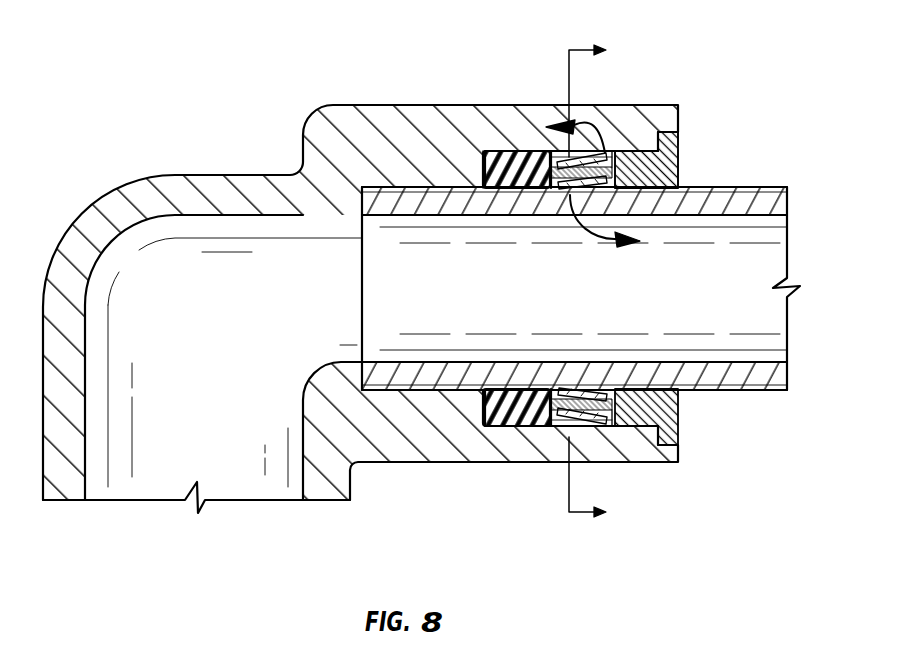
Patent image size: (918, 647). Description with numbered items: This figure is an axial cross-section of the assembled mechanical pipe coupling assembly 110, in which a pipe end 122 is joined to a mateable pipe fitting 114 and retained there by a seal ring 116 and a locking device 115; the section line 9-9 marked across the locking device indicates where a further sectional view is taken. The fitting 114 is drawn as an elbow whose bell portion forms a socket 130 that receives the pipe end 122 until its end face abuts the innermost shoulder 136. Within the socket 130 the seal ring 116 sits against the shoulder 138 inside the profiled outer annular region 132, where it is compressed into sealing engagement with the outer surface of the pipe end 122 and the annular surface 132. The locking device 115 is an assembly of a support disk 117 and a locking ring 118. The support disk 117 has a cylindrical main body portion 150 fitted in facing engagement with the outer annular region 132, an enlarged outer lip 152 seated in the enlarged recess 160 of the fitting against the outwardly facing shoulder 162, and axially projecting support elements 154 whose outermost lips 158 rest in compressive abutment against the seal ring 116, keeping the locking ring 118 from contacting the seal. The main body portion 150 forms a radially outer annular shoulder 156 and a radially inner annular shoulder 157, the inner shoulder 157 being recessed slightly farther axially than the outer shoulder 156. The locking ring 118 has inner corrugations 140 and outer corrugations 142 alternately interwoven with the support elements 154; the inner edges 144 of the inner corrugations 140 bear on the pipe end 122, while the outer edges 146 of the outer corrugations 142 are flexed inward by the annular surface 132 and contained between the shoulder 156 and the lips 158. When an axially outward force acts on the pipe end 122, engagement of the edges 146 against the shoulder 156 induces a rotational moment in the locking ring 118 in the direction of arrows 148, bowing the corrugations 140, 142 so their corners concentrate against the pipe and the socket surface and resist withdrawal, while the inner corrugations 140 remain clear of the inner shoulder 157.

The section line 9- 9 is at (587, 282).
The mechanical pipe coupling assembly 110 is at (316, 64).
The pipe fitting 114 is at (238, 173).
The locking device 115 is at (678, 180).
The seal ring 116 is at (490, 148).
The support disk 117 is at (678, 160).
The locking ring 118 is at (556, 151).
The pipe end 122 is at (360, 275).
The socket 130 is at (680, 388).
The outer annular region of the socket profile 132 is at (527, 428).
The innermost shoulder 136 is at (360, 373).
The shoulder 138 is at (480, 170).
The inner corrugations 140 is at (580, 189).
The outer corrugations 142 is at (593, 153).
The inner edges of the inner corrugations 144 is at (560, 189).
The outer edges of the outer corrugations 146 is at (625, 151).
The arrows 148 is at (567, 118).
The main body portion 150 is at (680, 195).
The outer lip 152 is at (678, 140).
The support elements 154 is at (550, 178).
The radially outer annular shoulder 156 is at (652, 190).
The radially inner annular shoulder 157 is at (632, 190).
The lip 158 is at (497, 150).
The enlarged recess 160 is at (678, 133).
The outwardly facing shoulder 162 is at (660, 151).